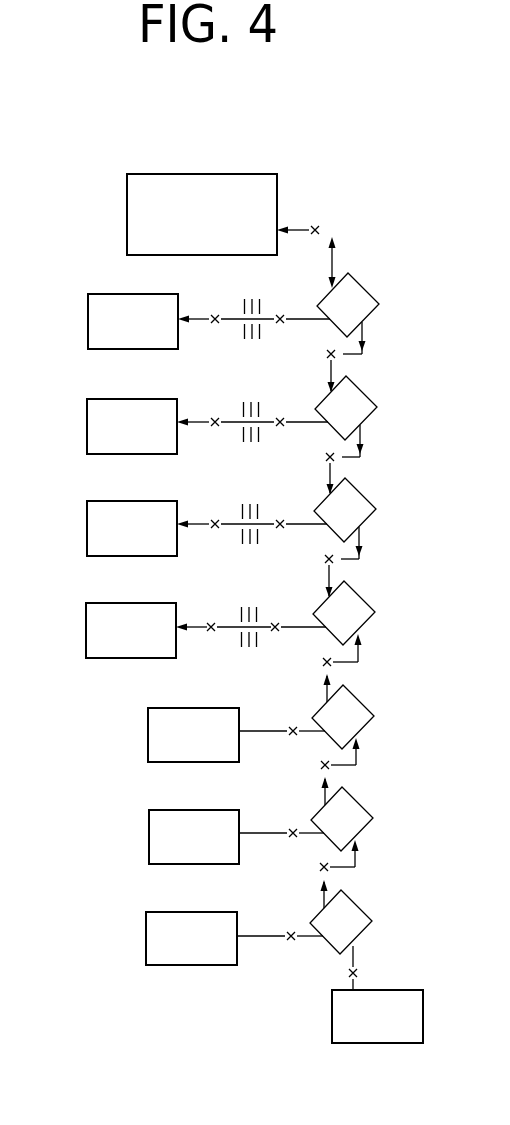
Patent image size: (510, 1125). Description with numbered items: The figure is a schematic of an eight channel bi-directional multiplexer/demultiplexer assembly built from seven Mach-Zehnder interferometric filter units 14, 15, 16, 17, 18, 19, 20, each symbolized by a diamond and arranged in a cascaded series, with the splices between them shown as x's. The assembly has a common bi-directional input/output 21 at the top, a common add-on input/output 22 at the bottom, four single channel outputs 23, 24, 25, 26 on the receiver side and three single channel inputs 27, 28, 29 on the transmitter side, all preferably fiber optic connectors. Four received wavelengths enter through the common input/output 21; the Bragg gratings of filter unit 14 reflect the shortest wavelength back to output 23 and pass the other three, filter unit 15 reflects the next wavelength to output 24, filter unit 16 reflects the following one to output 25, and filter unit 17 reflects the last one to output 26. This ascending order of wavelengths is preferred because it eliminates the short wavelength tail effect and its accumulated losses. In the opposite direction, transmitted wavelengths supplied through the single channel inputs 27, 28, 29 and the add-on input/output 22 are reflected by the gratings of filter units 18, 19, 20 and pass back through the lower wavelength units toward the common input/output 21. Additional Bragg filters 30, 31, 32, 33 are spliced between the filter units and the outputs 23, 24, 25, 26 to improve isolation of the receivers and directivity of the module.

The Mach-Zehnder interferometric unit 14 is at (363, 307).
The Mach-Zehnder interferometric unit 15 is at (355, 412).
The Mach-Zehnder interferometric unit 16 is at (355, 508).
The Mach-Zehnder interferometric unit 17 is at (355, 612).
The Mach-Zehnder interferometric unit 18 is at (350, 712).
The Mach-Zehnder interferometric unit 19 is at (352, 815).
The Mach-Zehnder interferometric unit 20 is at (355, 922).
The common bi-directional input/output 21 is at (222, 173).
The common add-on input/output 22 is at (423, 1015).
The single channel output 23 is at (88, 320).
The single channel output 24 is at (87, 426).
The single channel output 25 is at (87, 528).
The single channel output 26 is at (86, 628).
The single channel input 27 is at (148, 737).
The single channel input 28 is at (149, 836).
The single channel input 29 is at (146, 939).
The additional Bragg filter 30 is at (247, 345).
The additional Bragg filter 31 is at (246, 448).
The additional Bragg filter 32 is at (245, 550).
The additional Bragg filter 33 is at (247, 652).